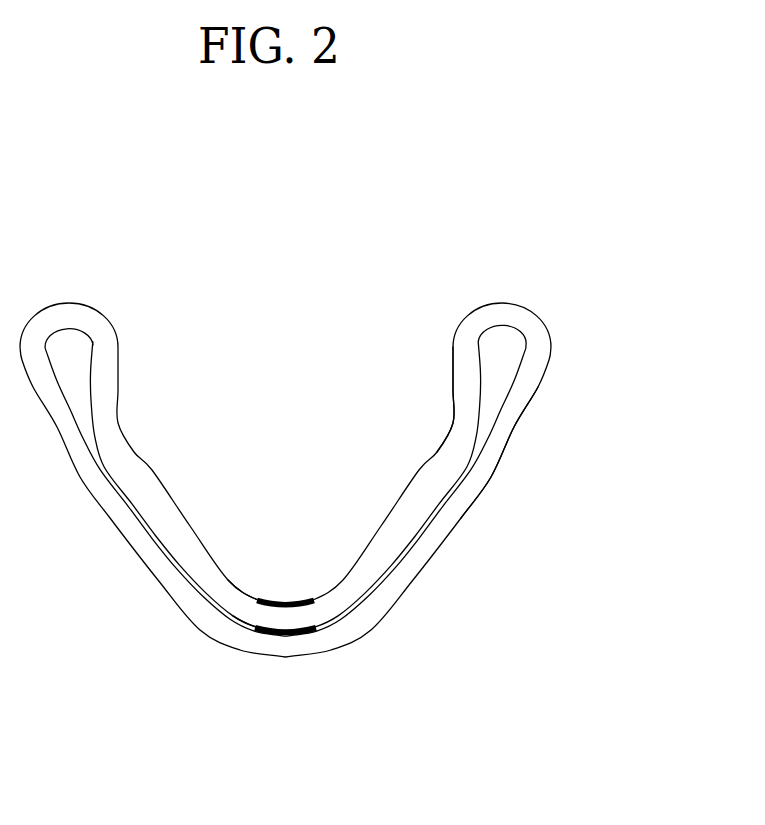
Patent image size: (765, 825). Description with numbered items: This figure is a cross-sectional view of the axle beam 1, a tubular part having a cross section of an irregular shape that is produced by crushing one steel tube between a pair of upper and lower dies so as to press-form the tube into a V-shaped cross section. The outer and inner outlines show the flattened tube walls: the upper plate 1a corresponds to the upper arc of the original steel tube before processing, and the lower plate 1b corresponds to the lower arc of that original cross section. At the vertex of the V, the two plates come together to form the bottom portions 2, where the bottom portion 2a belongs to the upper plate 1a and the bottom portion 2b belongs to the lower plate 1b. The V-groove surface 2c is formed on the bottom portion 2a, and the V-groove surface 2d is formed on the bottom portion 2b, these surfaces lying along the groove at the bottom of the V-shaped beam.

The axle beam 1 is at (534, 311).
The upper plate 1a is at (463, 405).
The lower plate 1b is at (493, 457).
The bottom portions 2 is at (297, 538).
The bottom portion of the upper plate 2a is at (286, 617).
The bottom portion of the lower plate 2b is at (312, 648).
The V-groove surface of the upper bottom portion 2c is at (263, 603).
The V-groove surface of the lower bottom portion 2d is at (263, 630).